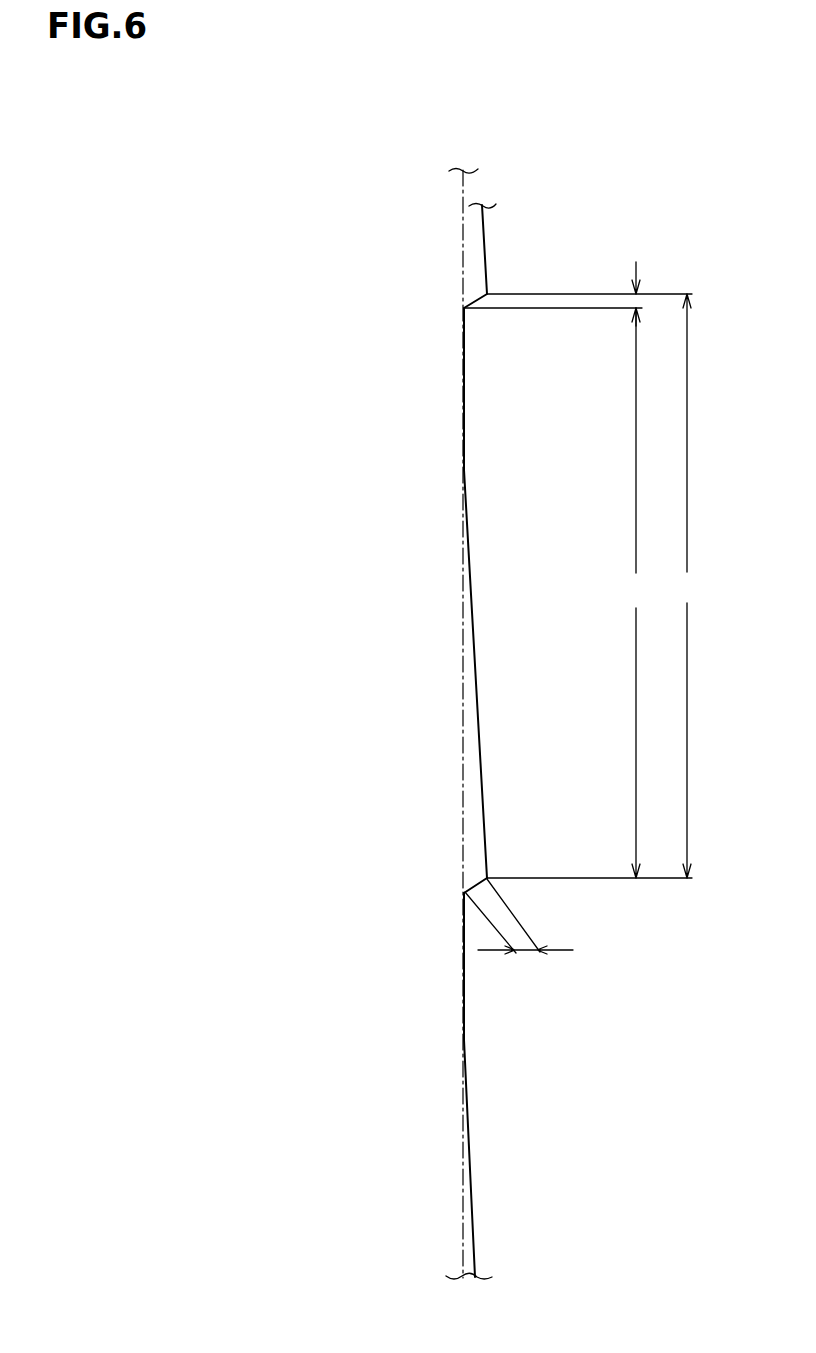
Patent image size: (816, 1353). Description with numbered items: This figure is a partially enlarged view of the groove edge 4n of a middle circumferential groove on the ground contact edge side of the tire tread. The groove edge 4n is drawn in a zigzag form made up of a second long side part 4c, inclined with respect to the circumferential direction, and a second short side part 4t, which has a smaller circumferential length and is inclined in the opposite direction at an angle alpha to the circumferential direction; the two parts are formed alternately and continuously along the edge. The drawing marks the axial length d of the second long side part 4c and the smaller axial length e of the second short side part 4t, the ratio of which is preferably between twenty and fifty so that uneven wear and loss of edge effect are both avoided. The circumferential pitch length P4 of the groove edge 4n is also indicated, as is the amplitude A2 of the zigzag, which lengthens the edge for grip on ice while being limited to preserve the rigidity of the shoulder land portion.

The groove edge 4n is at (485, 266).
The second long side part 4c is at (478, 750).
The second short side part 4t is at (486, 878).
The axial length of the second short side part e is at (647, 294).
The axial length of the second long side part d is at (636, 593).
The circumferential pitch length P4 is at (685, 586).
The amplitude A2 is at (519, 933).